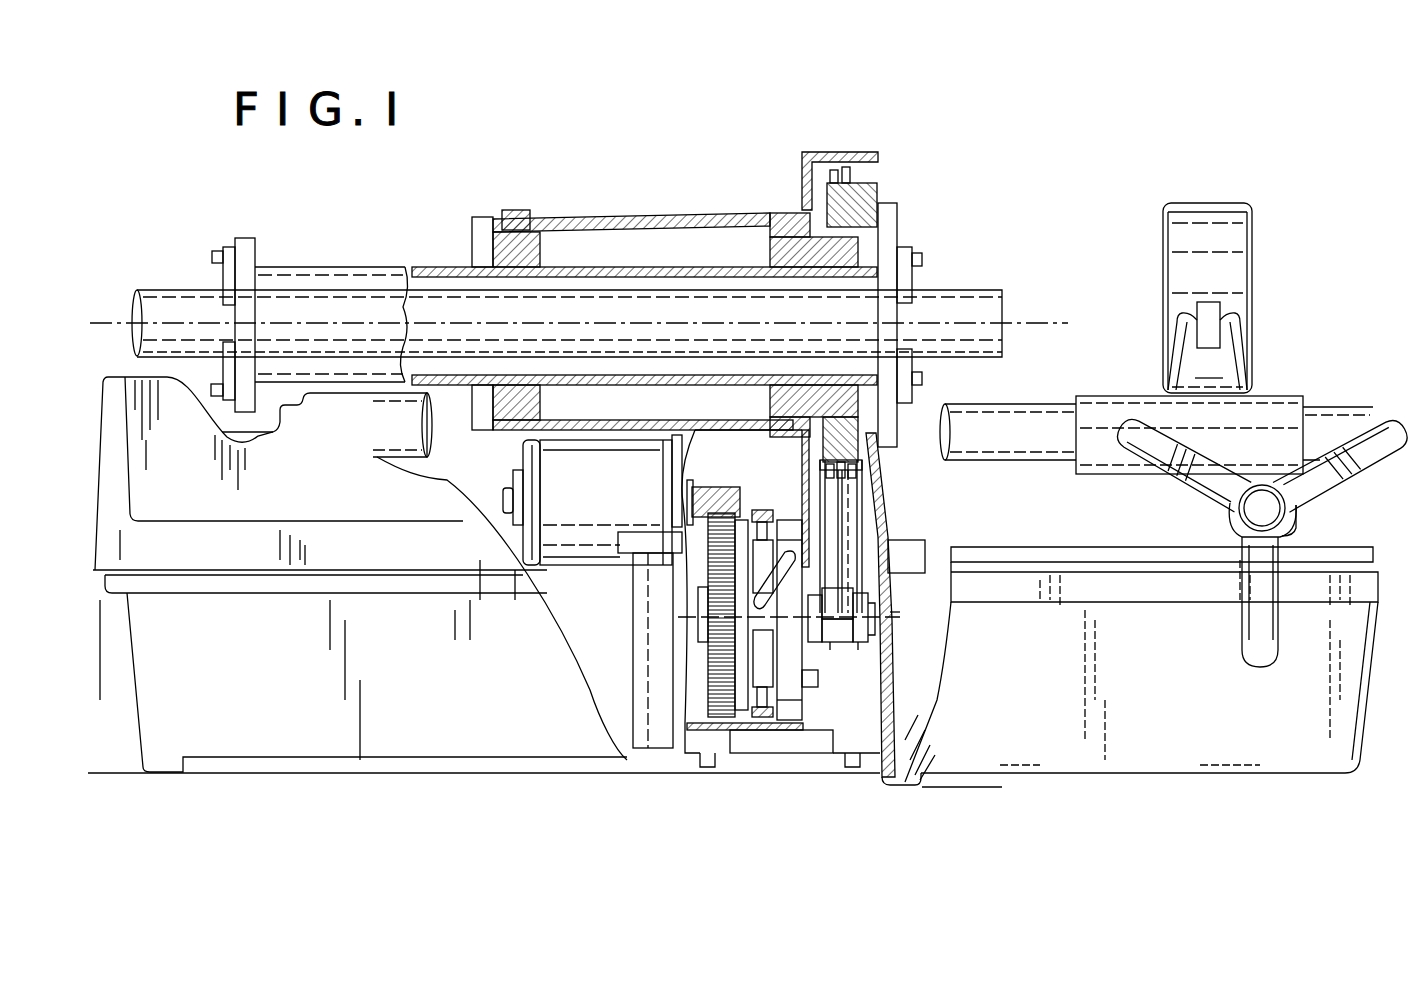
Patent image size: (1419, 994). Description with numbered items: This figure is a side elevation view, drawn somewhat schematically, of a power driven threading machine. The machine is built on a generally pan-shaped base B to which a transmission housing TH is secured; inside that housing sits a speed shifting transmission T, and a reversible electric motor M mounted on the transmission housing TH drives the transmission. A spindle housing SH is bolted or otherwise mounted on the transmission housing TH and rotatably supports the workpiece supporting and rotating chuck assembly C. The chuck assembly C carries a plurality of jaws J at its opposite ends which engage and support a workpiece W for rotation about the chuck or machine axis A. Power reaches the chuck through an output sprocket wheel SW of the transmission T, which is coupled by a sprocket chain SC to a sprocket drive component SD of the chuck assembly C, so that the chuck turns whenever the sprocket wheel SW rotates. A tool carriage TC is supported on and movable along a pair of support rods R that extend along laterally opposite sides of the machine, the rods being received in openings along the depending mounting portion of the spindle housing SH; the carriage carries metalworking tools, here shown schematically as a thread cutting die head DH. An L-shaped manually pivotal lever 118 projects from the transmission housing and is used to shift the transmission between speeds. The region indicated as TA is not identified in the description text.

The chuck or machine axis A is at (1040, 322).
The workpiece W is at (150, 290).
The chuck assembly C is at (380, 265).
The jaws J is at (218, 270).
The spindle housing SH is at (705, 215).
The sprocket drive component SD is at (830, 200).
The die head DH is at (1255, 200).
The support rods R is at (415, 440).
The tool carriage TC is at (1300, 520).
The reversible electric motor M is at (598, 591).
The speed shifting transmission T is at (758, 500).
The lever 118 is at (784, 555).
The sprocket chain SC is at (850, 515).
The output sprocket wheel SW is at (860, 622).
The tool adjustment TA is at (905, 612).
The transmission housing TH is at (895, 693).
The base B is at (165, 683).